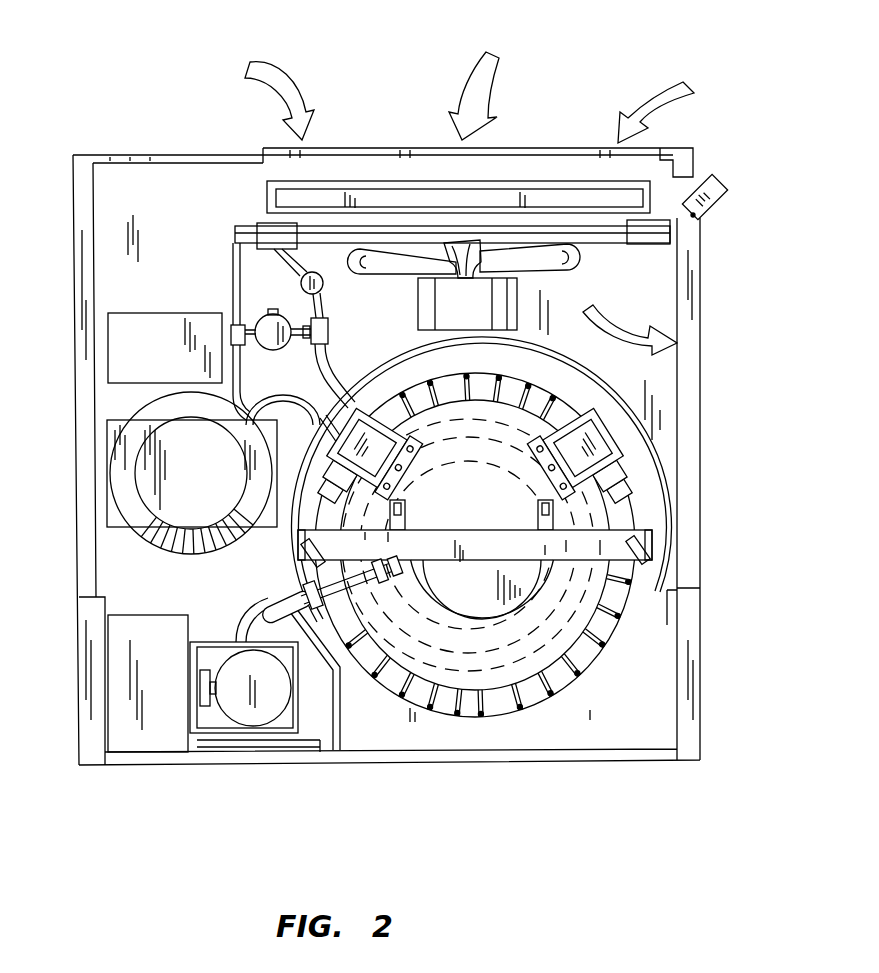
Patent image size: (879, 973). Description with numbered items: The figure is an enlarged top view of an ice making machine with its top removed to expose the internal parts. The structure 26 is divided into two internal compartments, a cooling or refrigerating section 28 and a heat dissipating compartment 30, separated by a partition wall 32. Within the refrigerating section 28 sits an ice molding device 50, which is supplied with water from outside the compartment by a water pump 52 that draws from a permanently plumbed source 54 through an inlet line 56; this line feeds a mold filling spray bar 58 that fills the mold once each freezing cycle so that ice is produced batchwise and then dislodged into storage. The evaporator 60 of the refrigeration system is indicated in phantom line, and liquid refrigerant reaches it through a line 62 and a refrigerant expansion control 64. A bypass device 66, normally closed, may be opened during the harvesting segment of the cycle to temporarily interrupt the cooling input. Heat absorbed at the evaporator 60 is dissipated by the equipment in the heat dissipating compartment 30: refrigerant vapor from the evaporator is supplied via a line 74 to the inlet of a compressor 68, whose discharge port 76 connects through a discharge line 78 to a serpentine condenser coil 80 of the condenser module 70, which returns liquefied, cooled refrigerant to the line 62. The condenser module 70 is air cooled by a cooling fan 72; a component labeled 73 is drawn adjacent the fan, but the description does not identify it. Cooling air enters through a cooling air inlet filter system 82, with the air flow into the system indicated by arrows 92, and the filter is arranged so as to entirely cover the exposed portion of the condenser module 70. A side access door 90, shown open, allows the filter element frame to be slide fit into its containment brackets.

The structure 26 is at (700, 712).
The cooling or refrigerating section 28 is at (612, 733).
The heat dissipating compartment 30 is at (621, 372).
The partition wall 32 is at (662, 472).
The ice molding device 50 is at (471, 708).
The water pump 52 is at (238, 668).
The source 54 is at (134, 620).
The inlet line 56 is at (272, 600).
The mold filling spray bar 58 is at (513, 591).
The evaporator 60 is at (383, 692).
The line 62 is at (334, 362).
The refrigerant expansion control 64 is at (323, 285).
The bypass device 66 is at (271, 326).
The compressor 68 is at (140, 470).
The condenser module 70 is at (659, 244).
The cooling fan 72 is at (577, 257).
The fan motor 73 is at (475, 316).
The line 74 is at (310, 392).
The discharge port 76 is at (212, 380).
The discharge line 78 is at (233, 272).
The serpentine condenser coil 80 is at (293, 230).
The cooling air inlet filter system 82 is at (258, 177).
The side access door 90 is at (710, 178).
The arrows 92 is at (457, 97).